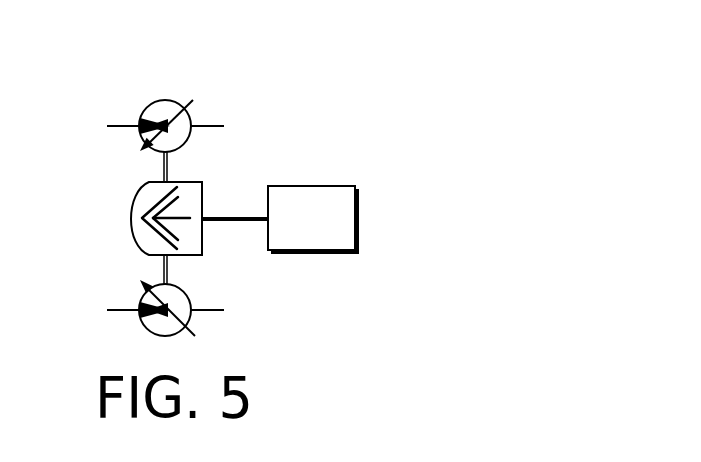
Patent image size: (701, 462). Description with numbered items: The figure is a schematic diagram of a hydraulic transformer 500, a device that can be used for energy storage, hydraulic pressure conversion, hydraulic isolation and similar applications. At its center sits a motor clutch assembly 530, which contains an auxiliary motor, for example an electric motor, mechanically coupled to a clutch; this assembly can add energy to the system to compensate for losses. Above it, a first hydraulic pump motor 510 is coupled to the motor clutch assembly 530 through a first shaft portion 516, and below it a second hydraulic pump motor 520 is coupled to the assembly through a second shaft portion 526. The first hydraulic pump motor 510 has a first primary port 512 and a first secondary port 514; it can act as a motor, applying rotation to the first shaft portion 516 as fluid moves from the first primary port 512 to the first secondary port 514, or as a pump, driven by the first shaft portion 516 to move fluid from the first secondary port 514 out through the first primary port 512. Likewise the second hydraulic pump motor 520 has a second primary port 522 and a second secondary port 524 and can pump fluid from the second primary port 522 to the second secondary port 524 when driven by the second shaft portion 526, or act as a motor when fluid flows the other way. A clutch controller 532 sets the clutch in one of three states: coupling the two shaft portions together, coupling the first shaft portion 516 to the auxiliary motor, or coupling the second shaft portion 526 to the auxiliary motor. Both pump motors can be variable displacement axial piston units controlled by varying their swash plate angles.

The hydraulic transformer 500 is at (78, 80).
The first hydraulic pump motor 510 is at (181, 148).
The first primary port 512 is at (125, 125).
The first secondary port 514 is at (213, 125).
The first shaft portion 516 is at (163, 165).
The second hydraulic pump motor 520 is at (170, 337).
The second primary port 522 is at (126, 309).
The second secondary port 524 is at (219, 294).
The second shaft portion 526 is at (163, 277).
The motor clutch assembly 530 is at (202, 208).
The clutch controller 532 is at (300, 186).